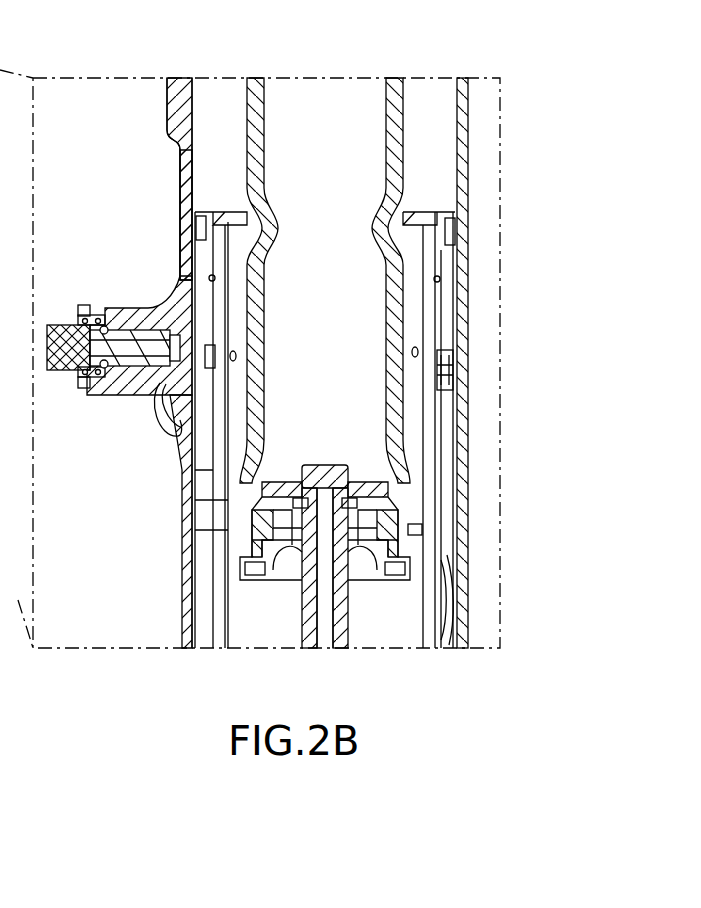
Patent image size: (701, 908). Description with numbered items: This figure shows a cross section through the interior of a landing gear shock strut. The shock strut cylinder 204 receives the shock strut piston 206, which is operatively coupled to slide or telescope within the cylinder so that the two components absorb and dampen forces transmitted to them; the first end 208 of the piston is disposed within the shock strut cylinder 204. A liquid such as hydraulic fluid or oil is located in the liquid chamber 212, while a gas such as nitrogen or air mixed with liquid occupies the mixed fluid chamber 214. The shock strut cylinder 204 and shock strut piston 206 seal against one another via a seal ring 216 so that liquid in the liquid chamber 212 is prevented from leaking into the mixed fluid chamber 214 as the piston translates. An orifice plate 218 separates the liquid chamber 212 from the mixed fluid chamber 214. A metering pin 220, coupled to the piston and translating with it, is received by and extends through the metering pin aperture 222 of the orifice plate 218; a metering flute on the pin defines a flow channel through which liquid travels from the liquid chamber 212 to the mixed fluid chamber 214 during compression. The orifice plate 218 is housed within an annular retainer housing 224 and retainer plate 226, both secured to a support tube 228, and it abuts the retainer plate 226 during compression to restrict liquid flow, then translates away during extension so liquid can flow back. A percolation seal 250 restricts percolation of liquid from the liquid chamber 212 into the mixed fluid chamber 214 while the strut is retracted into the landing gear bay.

The shock strut cylinder 204 is at (468, 177).
The shock strut piston 206 is at (433, 330).
The first end 208 is at (433, 250).
The liquid chamber 212 is at (245, 617).
The mixed fluid chamber 214 is at (208, 152).
The seal ring 216 is at (420, 528).
The orifice plate 218 is at (283, 520).
The metering pin 220 is at (343, 612).
The metering pin aperture 222 is at (362, 507).
The retainer housing 224 is at (415, 548).
The retainer plate 226 is at (352, 512).
The support tube 228 is at (398, 95).
The percolation seal 250 is at (290, 503).